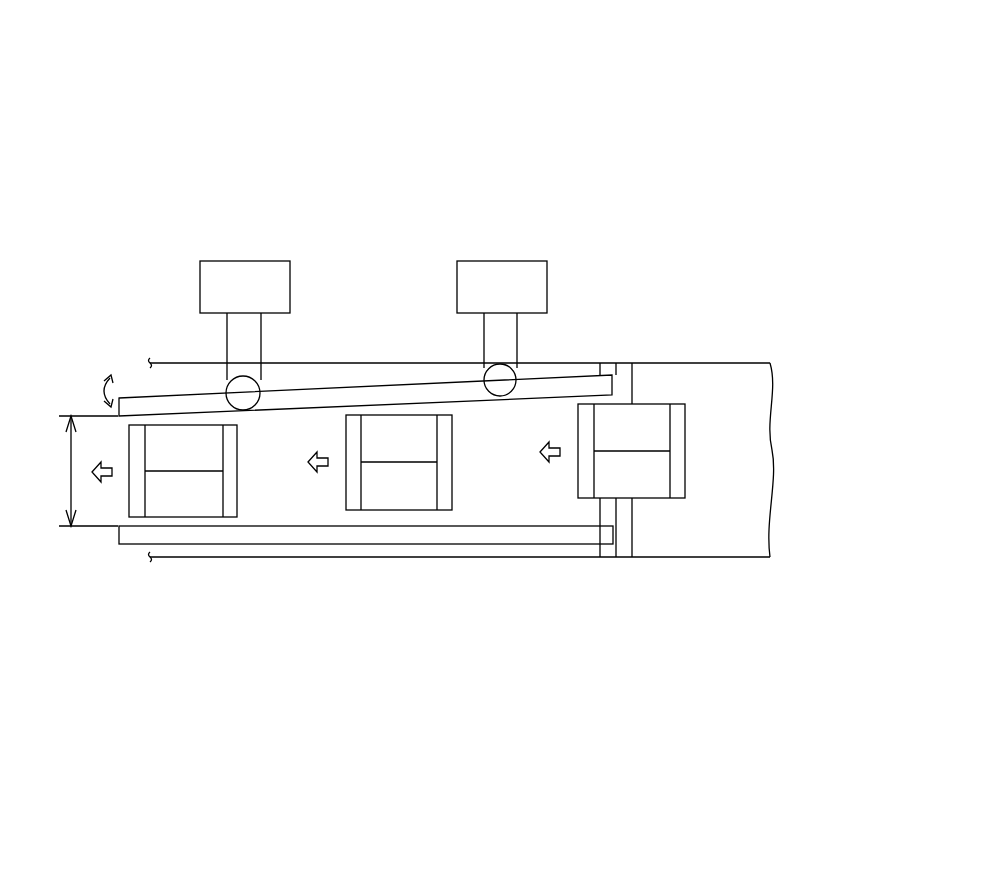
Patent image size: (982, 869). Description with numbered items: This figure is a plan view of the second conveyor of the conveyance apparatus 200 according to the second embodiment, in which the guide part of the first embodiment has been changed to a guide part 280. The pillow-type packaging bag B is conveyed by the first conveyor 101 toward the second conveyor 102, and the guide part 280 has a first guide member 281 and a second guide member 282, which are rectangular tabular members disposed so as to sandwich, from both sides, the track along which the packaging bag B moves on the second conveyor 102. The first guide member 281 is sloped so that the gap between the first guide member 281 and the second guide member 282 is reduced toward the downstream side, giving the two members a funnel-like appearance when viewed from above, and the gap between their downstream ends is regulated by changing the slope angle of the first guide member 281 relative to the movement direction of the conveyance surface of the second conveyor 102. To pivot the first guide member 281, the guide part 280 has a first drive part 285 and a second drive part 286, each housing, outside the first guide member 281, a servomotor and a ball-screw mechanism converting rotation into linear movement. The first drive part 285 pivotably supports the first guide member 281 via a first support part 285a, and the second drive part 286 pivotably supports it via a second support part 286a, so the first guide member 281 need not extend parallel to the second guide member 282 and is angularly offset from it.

The conveyance apparatus 200 is at (572, 121).
The guide part 280 is at (446, 205).
The first guide member 281 is at (368, 392).
The second guide member 282 is at (450, 535).
The first drive part 285 is at (503, 273).
The first support part 285a is at (505, 382).
The second drive part 286 is at (246, 272).
The second support part 286a is at (237, 390).
The first conveyor 101 is at (717, 385).
The second conveyor 102 is at (297, 515).
The packaging bag B is at (653, 488).